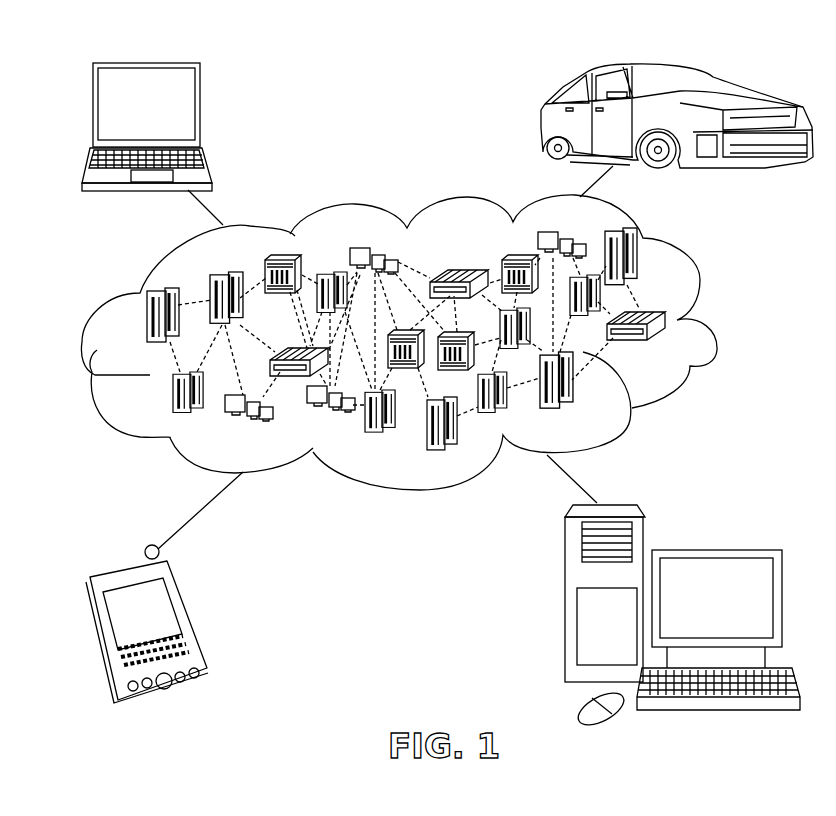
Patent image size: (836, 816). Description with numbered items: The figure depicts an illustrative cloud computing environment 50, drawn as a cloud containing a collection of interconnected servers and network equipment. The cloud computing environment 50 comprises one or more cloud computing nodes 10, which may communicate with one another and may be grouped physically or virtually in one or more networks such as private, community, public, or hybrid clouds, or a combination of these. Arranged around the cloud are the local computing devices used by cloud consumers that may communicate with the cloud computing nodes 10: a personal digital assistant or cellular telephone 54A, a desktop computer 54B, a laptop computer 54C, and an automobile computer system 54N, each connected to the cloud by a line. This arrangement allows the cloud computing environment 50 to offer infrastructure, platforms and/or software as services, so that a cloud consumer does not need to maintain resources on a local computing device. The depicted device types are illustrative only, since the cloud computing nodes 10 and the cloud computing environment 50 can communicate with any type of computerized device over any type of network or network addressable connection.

The cloud computing nodes 10 is at (447, 397).
The cloud computing environment 50 is at (717, 322).
The personal digital assistant (PDA) or cellular telephone 54A is at (195, 620).
The desktop computer 54B is at (715, 550).
The laptop computer 54C is at (200, 112).
The automobile computer system 54N is at (541, 122).